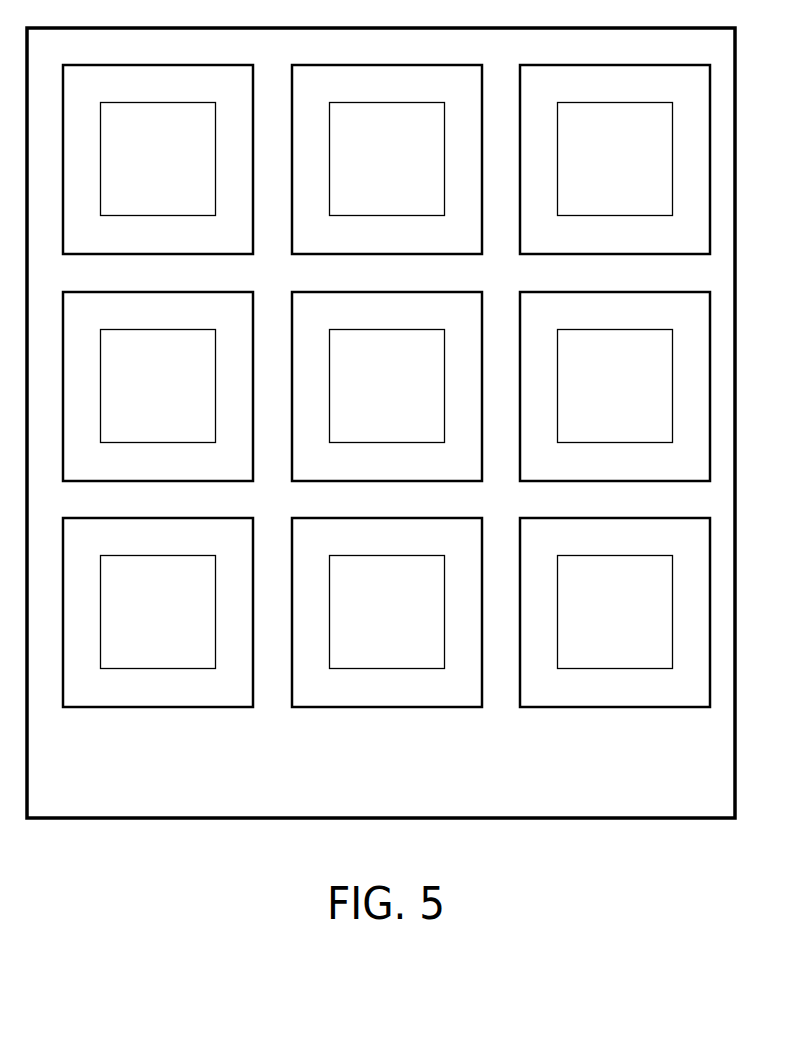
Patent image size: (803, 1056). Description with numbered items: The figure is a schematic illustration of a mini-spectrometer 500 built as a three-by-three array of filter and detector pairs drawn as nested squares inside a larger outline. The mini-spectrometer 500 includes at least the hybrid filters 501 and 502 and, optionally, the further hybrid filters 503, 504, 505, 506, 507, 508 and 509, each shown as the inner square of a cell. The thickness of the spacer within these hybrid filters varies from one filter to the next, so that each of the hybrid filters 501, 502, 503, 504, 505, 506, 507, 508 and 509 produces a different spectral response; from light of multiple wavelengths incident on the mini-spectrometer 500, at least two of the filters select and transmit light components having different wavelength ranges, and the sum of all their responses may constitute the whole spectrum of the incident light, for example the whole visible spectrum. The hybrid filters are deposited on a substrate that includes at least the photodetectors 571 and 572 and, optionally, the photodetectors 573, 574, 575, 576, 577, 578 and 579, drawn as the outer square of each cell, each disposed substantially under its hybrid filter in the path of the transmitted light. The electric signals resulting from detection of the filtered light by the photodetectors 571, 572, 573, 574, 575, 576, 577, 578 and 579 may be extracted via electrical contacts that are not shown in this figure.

The mini-spectrometer 500 is at (83, 802).
The hybrid filter 501 is at (139, 172).
The hybrid filter 502 is at (368, 172).
The hybrid filter 503 is at (596, 172).
The hybrid filter 504 is at (139, 399).
The hybrid filter 505 is at (368, 399).
The hybrid filter 506 is at (596, 399).
The hybrid filter 507 is at (139, 625).
The hybrid filter 508 is at (368, 625).
The hybrid filter 509 is at (596, 625).
The photodetector 571 is at (114, 244).
The photodetector 572 is at (344, 244).
The photodetector 573 is at (572, 244).
The photodetector 574 is at (114, 470).
The photodetector 575 is at (344, 470).
The photodetector 576 is at (572, 470).
The photodetector 577 is at (114, 696).
The photodetector 578 is at (344, 696).
The photodetector 579 is at (572, 696).